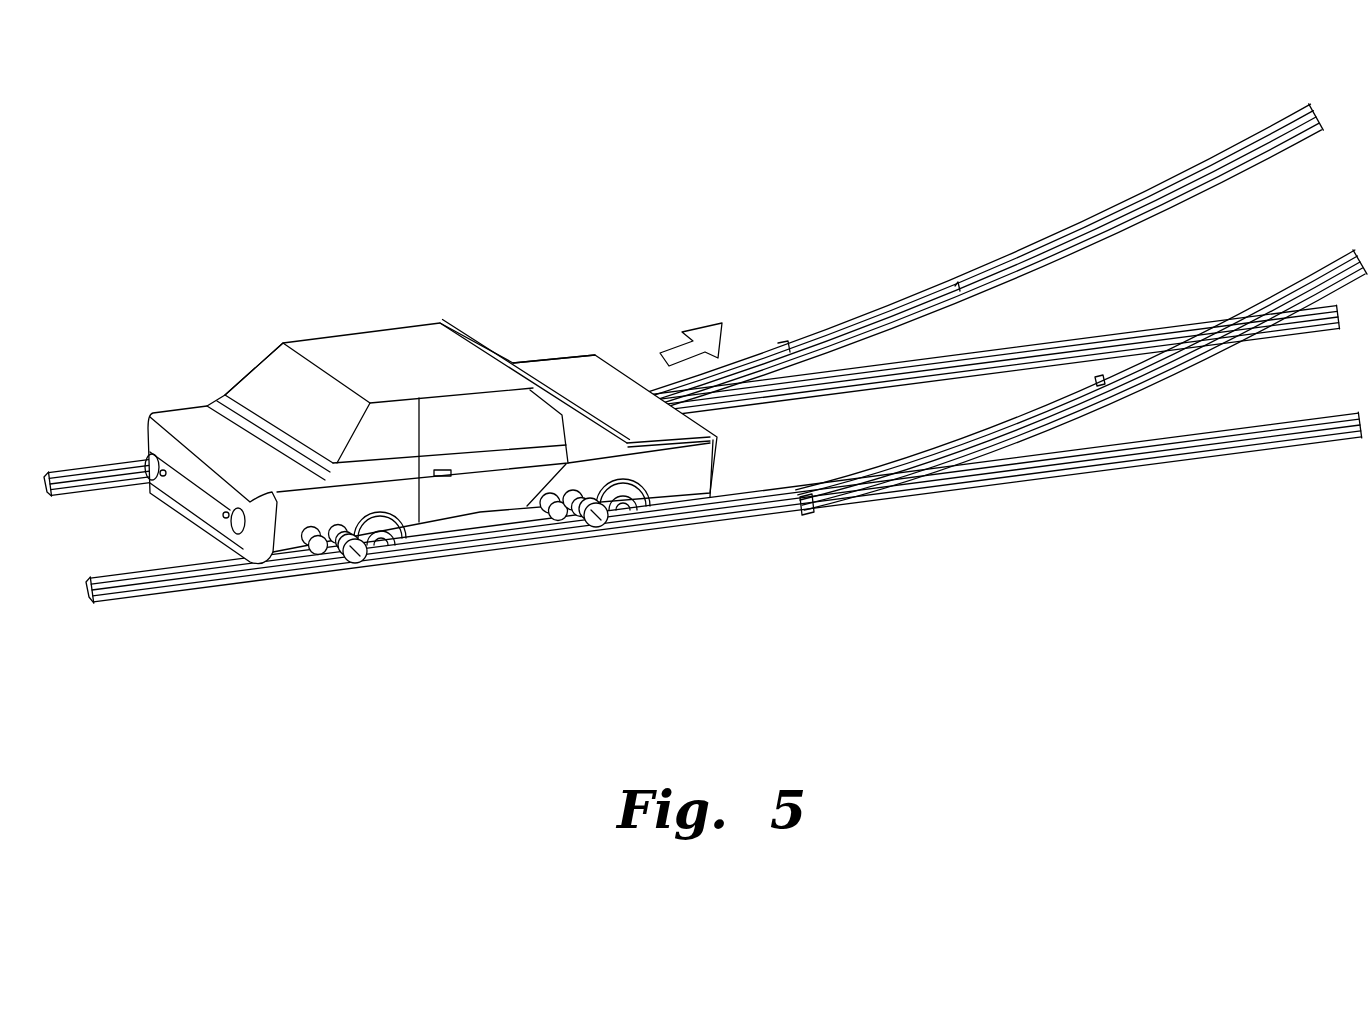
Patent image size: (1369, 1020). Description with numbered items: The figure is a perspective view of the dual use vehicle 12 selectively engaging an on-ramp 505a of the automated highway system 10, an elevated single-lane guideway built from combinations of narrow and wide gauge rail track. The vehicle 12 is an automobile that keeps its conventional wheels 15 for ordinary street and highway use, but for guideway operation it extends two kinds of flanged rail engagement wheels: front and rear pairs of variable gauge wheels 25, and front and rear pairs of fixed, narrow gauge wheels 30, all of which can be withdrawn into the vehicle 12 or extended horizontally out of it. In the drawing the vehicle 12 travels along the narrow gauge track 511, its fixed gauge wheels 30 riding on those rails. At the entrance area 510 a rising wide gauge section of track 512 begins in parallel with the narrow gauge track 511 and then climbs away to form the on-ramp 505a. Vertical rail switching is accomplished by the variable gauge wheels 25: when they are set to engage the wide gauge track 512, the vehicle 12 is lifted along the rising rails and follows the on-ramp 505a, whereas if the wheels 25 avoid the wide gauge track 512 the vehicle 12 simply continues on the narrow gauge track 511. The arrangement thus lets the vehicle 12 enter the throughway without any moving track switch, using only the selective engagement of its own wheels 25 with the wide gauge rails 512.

The automated highway system 10 is at (707, 123).
The dual use vehicle 12 is at (465, 285).
The conventional wheels 15 is at (405, 532).
The variable gauge flanged rail engagement wheels 25 is at (365, 557).
The fixed gauge flanged rail engagement wheels 30 is at (327, 572).
The on-ramp 505a is at (1040, 197).
The entrance area 510 is at (115, 432).
The narrow gauge track 511 is at (84, 481).
The wide gauge track 512 is at (782, 343).